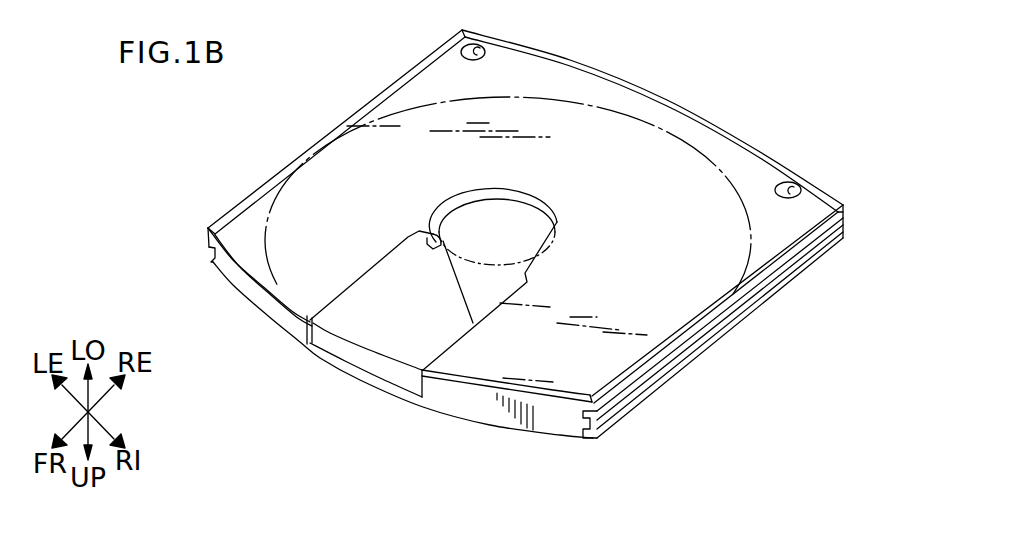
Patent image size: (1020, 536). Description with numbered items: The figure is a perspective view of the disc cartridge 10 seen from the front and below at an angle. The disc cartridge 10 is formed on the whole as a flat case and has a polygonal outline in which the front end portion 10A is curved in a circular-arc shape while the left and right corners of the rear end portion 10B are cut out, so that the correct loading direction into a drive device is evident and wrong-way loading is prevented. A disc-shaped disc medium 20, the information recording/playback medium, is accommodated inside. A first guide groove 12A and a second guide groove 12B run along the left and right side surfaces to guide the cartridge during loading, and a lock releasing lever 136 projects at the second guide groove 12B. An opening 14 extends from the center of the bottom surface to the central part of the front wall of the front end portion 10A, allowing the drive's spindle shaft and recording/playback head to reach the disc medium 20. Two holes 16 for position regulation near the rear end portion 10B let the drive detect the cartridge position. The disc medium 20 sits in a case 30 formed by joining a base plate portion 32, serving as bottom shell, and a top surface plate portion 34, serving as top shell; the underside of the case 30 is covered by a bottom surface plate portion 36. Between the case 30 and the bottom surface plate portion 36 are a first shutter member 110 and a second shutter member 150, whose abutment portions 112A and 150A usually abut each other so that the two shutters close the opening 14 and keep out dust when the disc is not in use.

The disc cartridge 10 is at (688, 43).
The front end portion 10A is at (527, 432).
The rear end portion 10B is at (668, 100).
The first guide groove 12A is at (208, 246).
The second guide groove 12B is at (572, 434).
The opening 14 is at (398, 268).
The holes for position regulation 16 is at (482, 43).
The disc medium 20 is at (698, 180).
The case 30 is at (713, 345).
The base plate portion 32 is at (713, 313).
The top surface plate portion 34 is at (667, 373).
The bottom surface plate portion 36 is at (727, 265).
The first shutter member 110 is at (378, 344).
The abutment portion of the first shutter member 112A is at (447, 255).
The lock releasing lever 136 is at (623, 433).
The second shutter member 150 is at (482, 292).
The abutment portion of the second shutter member 150A is at (424, 232).